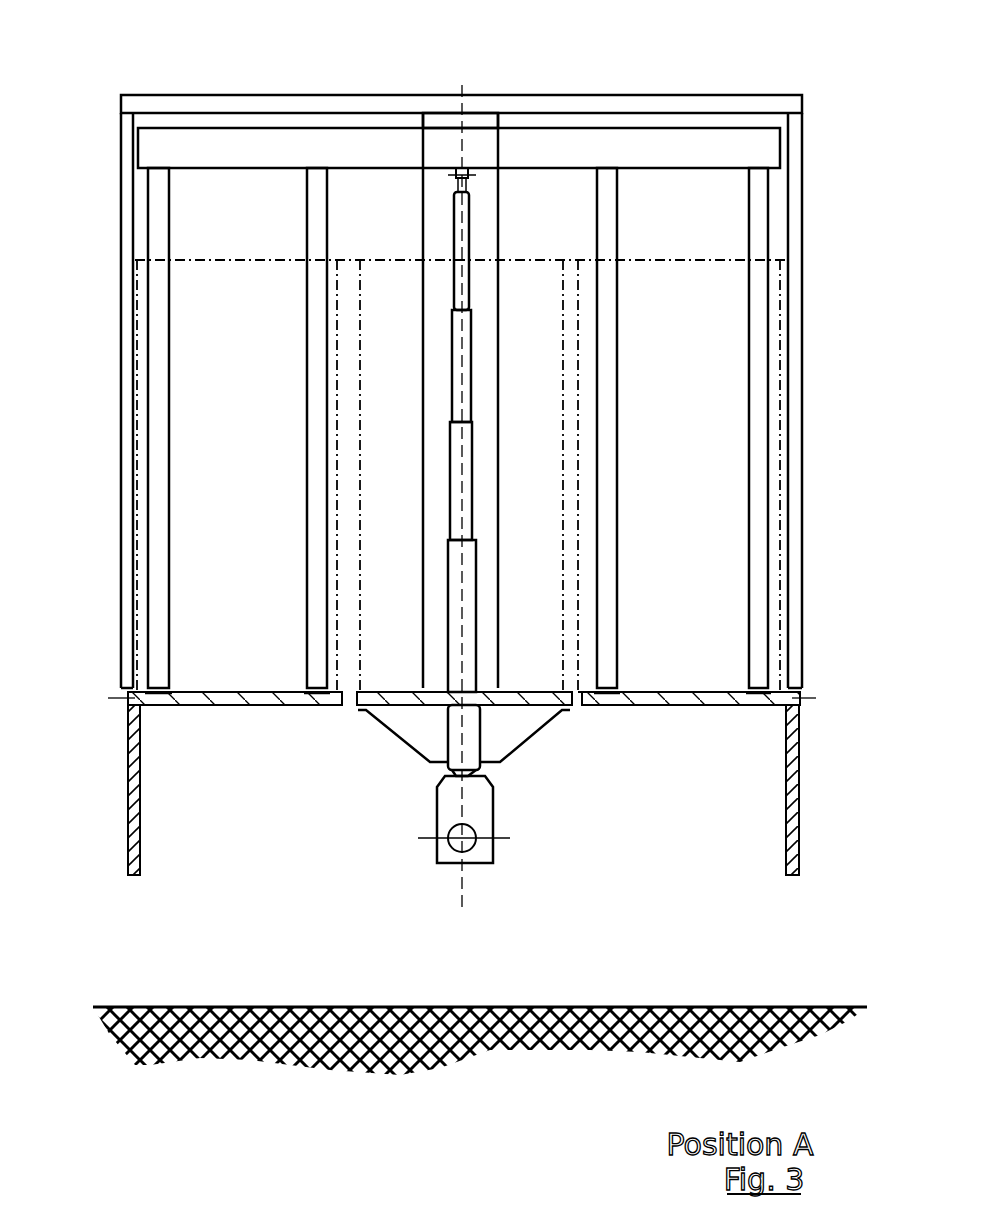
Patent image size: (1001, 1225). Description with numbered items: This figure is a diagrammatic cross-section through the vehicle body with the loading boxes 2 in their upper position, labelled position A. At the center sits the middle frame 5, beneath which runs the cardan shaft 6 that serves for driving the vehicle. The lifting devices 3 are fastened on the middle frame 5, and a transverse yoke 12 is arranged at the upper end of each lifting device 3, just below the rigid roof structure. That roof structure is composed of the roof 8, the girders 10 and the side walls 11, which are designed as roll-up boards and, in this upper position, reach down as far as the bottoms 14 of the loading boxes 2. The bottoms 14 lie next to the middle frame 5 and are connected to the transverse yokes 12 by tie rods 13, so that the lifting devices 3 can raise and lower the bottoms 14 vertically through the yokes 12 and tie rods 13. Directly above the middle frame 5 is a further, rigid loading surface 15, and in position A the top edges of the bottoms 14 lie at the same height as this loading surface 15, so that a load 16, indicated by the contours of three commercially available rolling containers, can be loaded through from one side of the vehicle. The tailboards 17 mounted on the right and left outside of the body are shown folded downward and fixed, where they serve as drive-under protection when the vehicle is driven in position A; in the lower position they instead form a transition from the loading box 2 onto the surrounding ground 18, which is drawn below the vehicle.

The loading box 2 is at (458, 430).
The lifting device 3 is at (463, 501).
The middle frame 5 is at (512, 776).
The cardan shaft 6 is at (458, 843).
The roof 8 is at (608, 100).
The girder 10 is at (468, 121).
The side wall 11 is at (126, 375).
The transverse yoke 12 is at (768, 151).
The tie rod 13 is at (160, 447).
The bottom 14 is at (255, 700).
The loading surface 15 is at (362, 710).
The load 16 is at (227, 258).
The tailboard 17 is at (127, 808).
The ground 18 is at (686, 1046).